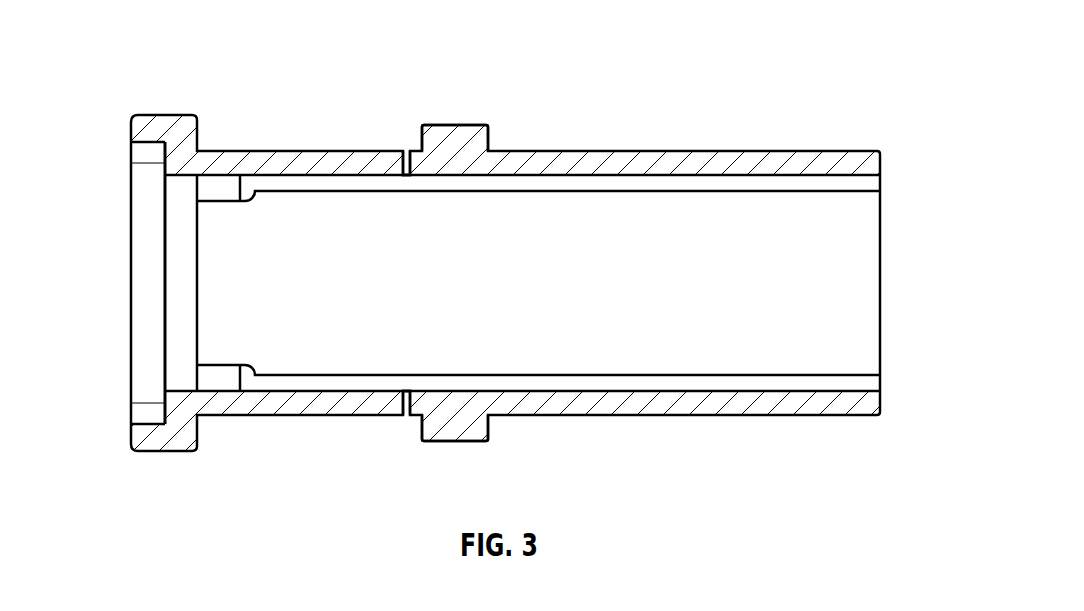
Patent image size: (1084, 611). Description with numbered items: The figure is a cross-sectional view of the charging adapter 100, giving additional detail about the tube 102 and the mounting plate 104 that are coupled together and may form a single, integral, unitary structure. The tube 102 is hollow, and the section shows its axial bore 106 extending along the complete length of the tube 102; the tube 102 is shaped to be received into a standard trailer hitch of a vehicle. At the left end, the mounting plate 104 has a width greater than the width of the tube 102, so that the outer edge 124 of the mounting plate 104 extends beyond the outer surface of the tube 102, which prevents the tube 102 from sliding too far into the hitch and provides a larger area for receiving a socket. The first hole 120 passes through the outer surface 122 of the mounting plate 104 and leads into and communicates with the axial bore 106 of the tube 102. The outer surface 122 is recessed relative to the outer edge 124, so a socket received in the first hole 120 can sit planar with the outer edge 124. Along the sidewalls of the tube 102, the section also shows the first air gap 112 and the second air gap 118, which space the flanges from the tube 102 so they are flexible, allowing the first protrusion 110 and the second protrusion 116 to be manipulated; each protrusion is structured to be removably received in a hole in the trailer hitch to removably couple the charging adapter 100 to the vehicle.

The charging adapter 100 is at (148, 56).
The tube 102 is at (708, 160).
The mounting plate 104 is at (162, 435).
The axial bore 106 is at (865, 290).
The first protrusion 110 is at (455, 140).
The first air gap 112 is at (405, 145).
The second protrusion 116 is at (455, 436).
The second air gap 118 is at (405, 421).
The first hole 120 is at (158, 261).
The outer surface 122 is at (158, 174).
The outer edge 124 is at (130, 442).